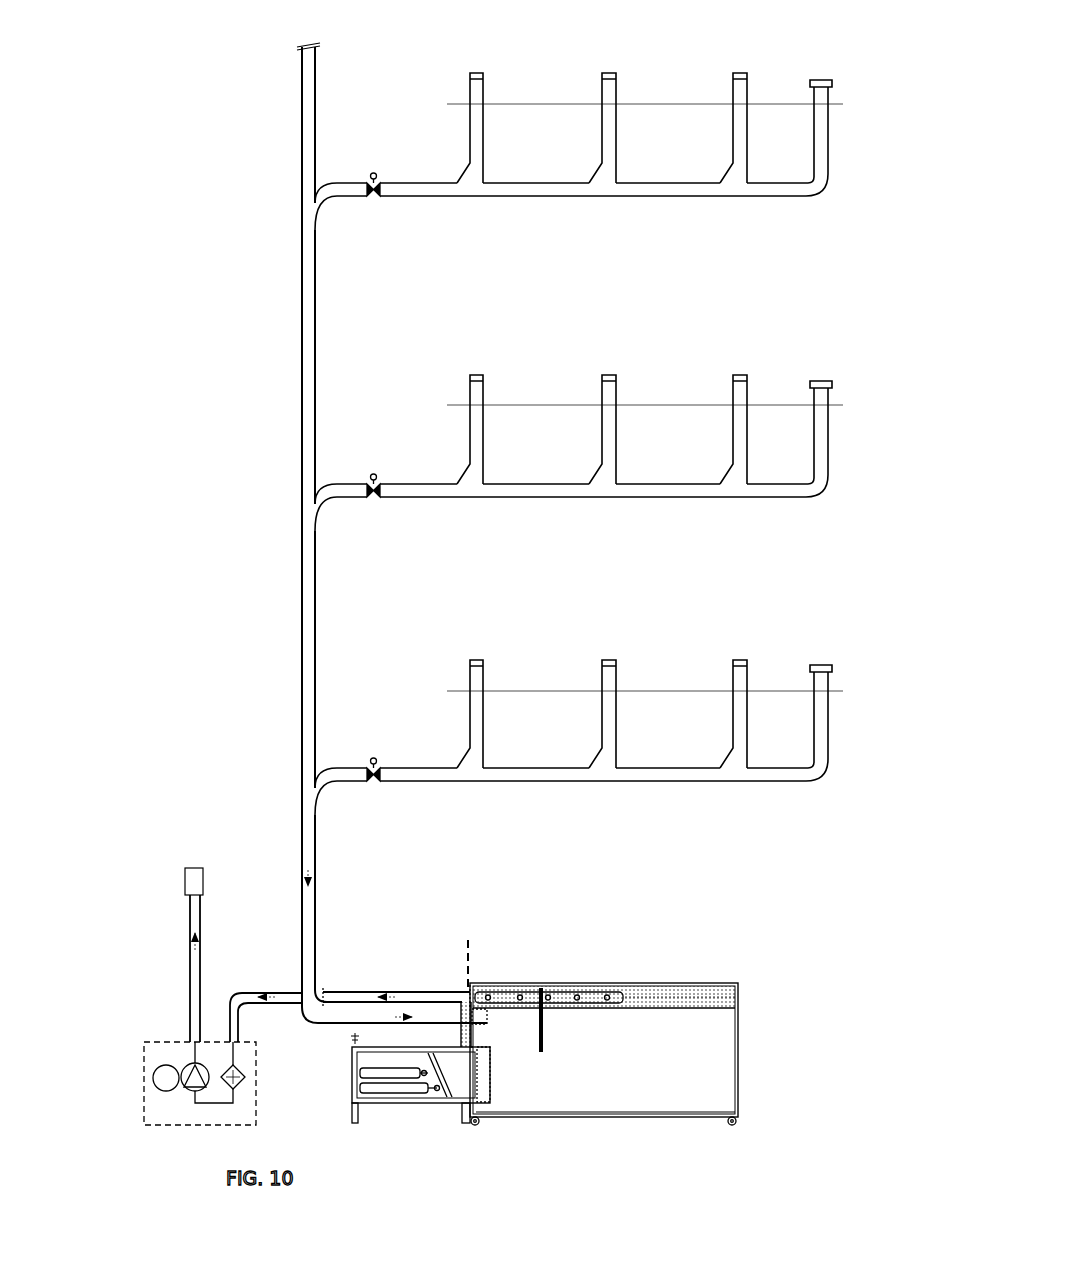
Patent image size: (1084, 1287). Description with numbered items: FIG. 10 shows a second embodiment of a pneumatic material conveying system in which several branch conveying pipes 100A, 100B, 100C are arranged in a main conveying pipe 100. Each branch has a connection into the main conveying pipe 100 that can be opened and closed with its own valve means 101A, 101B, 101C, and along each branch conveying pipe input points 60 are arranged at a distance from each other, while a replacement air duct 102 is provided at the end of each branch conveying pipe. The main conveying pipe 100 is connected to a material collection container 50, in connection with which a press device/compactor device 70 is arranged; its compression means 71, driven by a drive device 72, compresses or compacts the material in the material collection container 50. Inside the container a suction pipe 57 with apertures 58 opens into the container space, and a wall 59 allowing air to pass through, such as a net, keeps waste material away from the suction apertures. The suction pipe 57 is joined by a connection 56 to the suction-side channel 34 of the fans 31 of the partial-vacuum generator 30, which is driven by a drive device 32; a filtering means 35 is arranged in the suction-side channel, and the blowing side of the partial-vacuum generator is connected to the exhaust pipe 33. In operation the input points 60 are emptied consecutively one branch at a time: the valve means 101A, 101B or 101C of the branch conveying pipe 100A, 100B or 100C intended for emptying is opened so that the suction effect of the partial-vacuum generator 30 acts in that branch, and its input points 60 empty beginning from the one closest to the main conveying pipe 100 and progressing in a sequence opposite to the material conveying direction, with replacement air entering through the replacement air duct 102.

The partial-vacuum generator 30 is at (142, 1042).
The fan 31 is at (186, 1065).
The drive device 32 is at (162, 1065).
The exhaust pipe 33 is at (200, 945).
The suction-side channel 34 is at (238, 1000).
The filtering means 35 is at (240, 1079).
The material collection container 50 is at (657, 978).
The connection 56 is at (468, 988).
The suction pipe 57 is at (540, 990).
The apertures 58 is at (513, 992).
The wall allowing air to pass through 59 is at (633, 998).
The input point 60 is at (474, 70).
The press device/compactor device 70 is at (373, 1112).
The compression means 71 is at (462, 1119).
The drive device 72 is at (410, 1076).
The main conveying pipe 100 is at (315, 930).
The branch conveying pipe 100A is at (503, 775).
The branch conveying pipe 100B is at (520, 490).
The branch conveying pipe 100C is at (520, 188).
The valve means 101A is at (373, 763).
The valve means 101B is at (373, 479).
The valve means 101C is at (373, 178).
The replacement air duct 102 is at (820, 133).